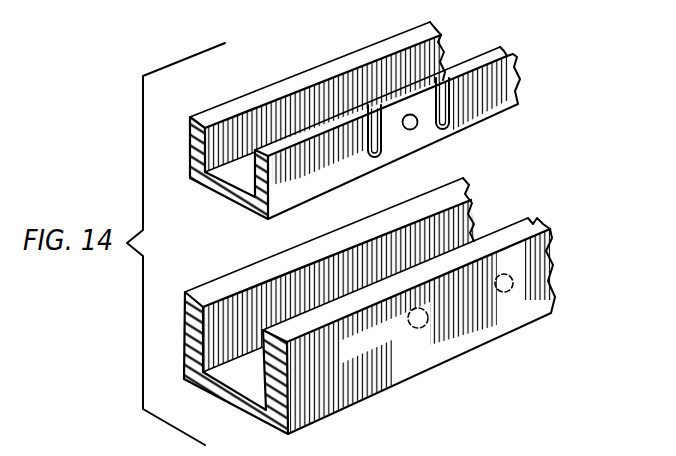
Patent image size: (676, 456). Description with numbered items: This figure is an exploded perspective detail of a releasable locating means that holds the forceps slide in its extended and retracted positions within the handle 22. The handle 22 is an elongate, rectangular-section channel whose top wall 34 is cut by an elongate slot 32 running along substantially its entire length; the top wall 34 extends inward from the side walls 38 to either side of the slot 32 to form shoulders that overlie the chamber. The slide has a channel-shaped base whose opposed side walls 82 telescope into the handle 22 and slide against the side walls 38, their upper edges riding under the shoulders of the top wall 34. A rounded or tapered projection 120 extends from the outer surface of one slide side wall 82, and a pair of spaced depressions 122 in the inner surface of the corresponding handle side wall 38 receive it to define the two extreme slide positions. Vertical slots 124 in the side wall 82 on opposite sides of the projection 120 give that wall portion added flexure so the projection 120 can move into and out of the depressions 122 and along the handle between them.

The handle 22 is at (415, 315).
The slot 32 is at (296, 277).
The top wall 34 is at (540, 211).
The side wall 38 is at (341, 402).
The depressions 122 is at (410, 312).
The side wall 82 is at (378, 120).
The vertical slots 124 is at (373, 152).
The projection 120 is at (414, 126).